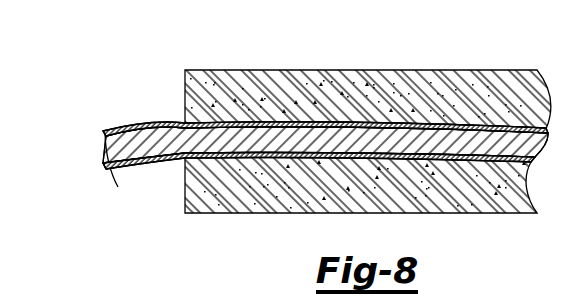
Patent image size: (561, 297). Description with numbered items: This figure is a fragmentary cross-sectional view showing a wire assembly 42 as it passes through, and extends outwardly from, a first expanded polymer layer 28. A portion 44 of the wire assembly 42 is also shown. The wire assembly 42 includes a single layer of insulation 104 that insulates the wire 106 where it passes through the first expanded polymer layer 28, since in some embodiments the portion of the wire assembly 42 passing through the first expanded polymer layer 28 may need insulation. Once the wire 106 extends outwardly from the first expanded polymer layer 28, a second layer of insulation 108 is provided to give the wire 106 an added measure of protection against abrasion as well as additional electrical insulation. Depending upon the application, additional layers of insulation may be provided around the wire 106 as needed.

The first expanded polymer layer 28 is at (227, 70).
The wire assembly 42 is at (319, 126).
The portion of wire assembly 44 is at (149, 123).
The single layer of insulation 104 is at (104, 131).
The wire 106 is at (118, 153).
The second layer of insulation 108 is at (106, 130).